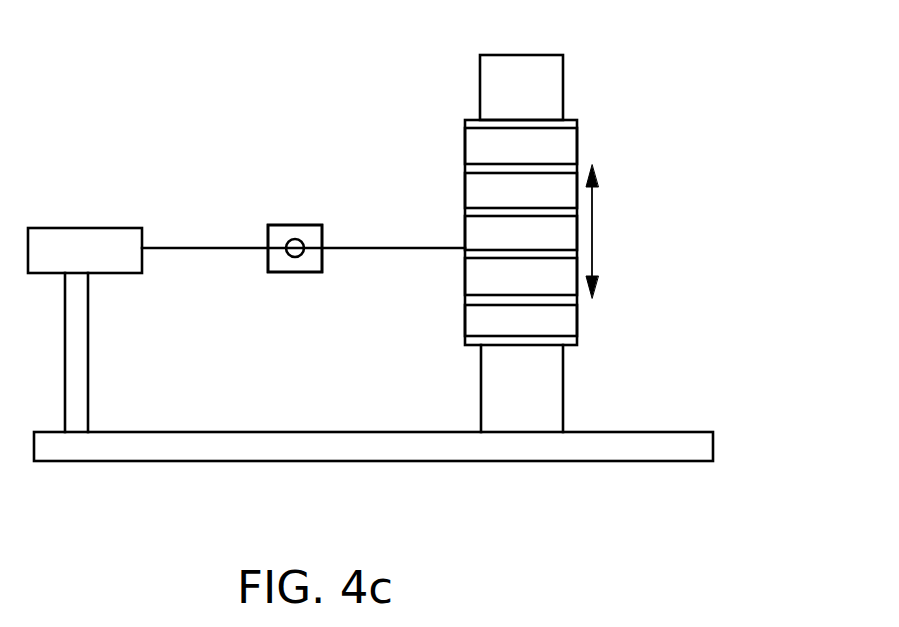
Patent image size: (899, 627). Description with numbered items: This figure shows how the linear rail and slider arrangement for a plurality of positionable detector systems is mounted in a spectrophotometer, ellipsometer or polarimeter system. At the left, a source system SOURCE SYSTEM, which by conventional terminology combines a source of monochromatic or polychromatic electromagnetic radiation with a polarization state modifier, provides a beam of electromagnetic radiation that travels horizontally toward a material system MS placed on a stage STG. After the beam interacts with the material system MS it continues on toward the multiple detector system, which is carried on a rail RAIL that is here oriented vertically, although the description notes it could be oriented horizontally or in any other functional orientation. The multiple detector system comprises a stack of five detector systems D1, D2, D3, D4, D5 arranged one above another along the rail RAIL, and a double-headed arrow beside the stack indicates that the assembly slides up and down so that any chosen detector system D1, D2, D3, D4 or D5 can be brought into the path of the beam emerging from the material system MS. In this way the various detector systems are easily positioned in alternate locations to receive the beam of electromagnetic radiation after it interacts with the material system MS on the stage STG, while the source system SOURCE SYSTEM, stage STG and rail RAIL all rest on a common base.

The source system SOURCE SYSTEM is at (86, 294).
The material system MS is at (298, 222).
The stage STG is at (300, 275).
The rail RAIL is at (572, 85).
The detector system D1 is at (521, 321).
The detector system D2 is at (521, 276).
The detector system D3 is at (521, 233).
The detector system D4 is at (521, 190).
The detector system D5 is at (521, 146).